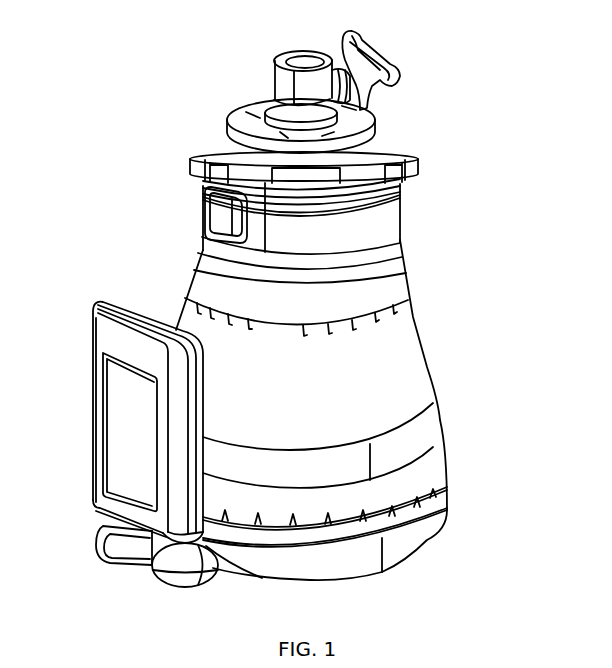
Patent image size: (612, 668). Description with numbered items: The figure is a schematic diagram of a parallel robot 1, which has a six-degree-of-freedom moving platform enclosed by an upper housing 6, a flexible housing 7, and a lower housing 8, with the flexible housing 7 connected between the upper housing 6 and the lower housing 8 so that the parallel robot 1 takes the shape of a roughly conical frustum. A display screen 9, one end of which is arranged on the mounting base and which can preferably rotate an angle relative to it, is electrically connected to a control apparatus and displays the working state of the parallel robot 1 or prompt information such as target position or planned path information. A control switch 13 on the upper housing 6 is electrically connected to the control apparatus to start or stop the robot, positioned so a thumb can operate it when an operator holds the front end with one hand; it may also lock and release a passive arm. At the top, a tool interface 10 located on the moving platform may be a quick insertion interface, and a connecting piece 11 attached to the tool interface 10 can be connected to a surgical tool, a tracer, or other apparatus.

The parallel robot 1 is at (160, 272).
The upper housing 6 is at (373, 228).
The flexible housing 7 is at (395, 393).
The lower housing 8 is at (420, 535).
The display screen 9 is at (127, 420).
The tool interface 10 is at (232, 140).
The connecting piece 11 is at (287, 88).
The control switch 13 is at (208, 213).